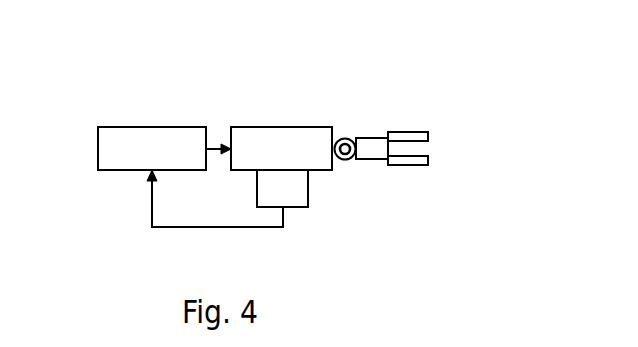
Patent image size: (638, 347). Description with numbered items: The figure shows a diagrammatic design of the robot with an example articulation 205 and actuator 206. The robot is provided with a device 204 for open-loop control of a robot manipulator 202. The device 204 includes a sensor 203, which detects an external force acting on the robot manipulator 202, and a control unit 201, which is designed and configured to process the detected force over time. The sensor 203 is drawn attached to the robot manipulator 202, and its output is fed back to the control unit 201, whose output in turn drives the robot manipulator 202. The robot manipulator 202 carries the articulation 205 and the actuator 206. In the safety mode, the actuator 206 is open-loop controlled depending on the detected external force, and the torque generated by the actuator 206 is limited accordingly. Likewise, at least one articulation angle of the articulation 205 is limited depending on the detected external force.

The control unit 201 is at (152, 148).
The robot manipulator 202 is at (323, 117).
The sensor 203 is at (282, 188).
The device 204 is at (240, 203).
The articulation 205 is at (347, 162).
The actuator 206 is at (348, 137).